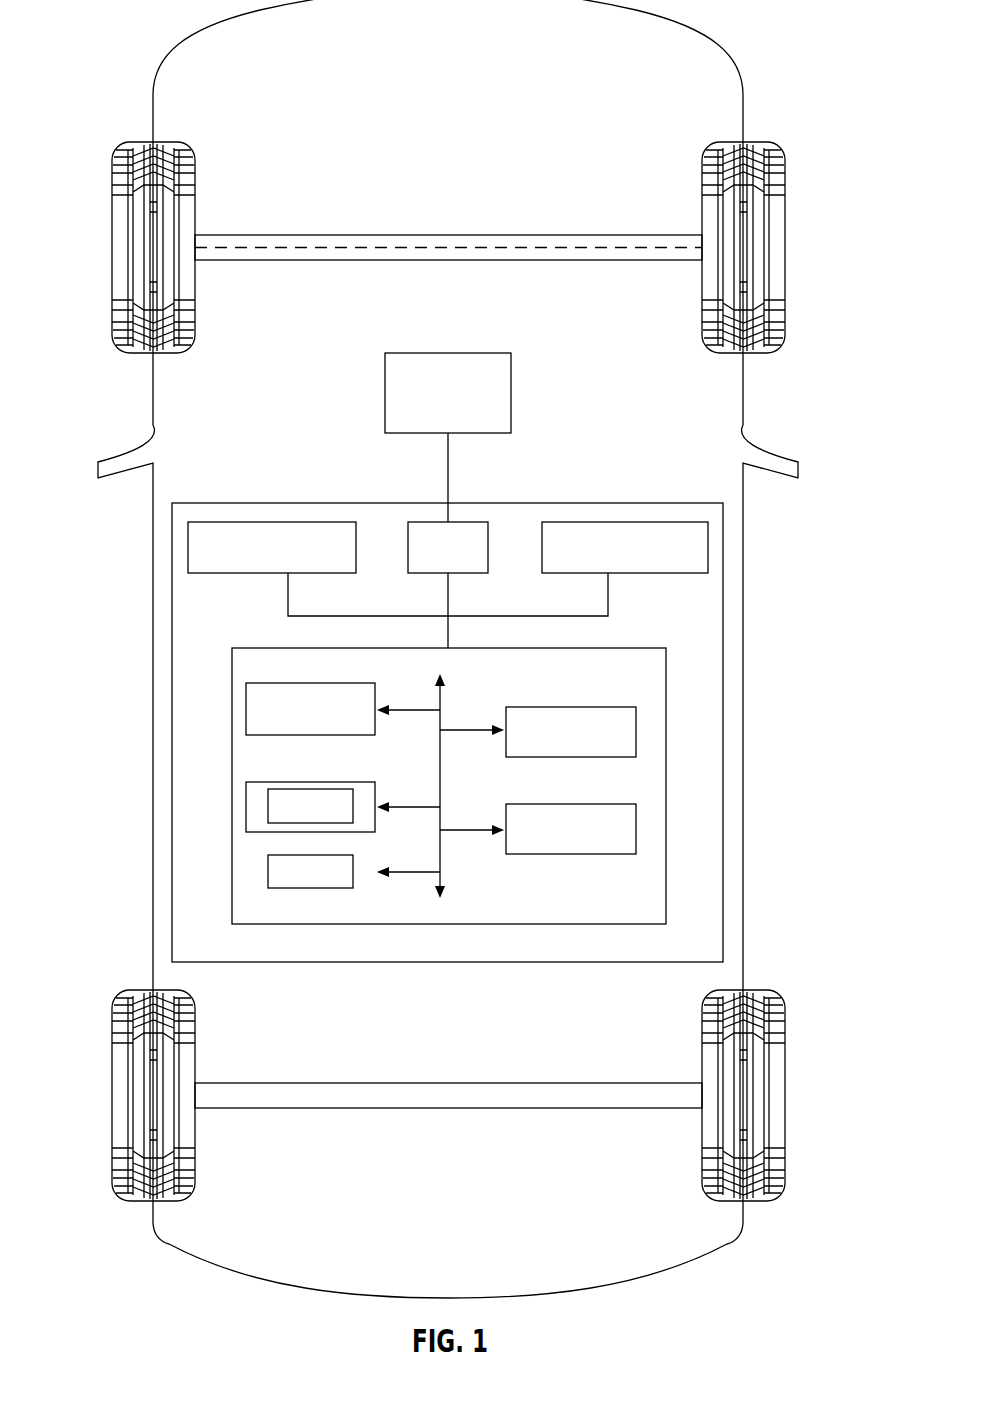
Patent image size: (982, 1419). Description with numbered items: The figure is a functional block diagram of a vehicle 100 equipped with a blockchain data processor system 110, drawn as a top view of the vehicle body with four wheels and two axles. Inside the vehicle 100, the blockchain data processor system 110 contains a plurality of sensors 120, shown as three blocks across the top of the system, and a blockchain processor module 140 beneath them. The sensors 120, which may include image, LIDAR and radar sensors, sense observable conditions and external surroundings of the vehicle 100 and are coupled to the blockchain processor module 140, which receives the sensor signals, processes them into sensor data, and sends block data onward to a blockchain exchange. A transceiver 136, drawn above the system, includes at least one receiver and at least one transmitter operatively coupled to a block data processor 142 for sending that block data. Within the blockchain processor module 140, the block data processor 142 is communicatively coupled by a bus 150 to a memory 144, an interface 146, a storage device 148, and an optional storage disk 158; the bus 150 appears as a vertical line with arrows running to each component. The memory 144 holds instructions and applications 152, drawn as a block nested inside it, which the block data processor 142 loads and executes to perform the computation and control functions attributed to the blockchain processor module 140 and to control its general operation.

The vehicle 100 is at (150, 48).
The blockchain data processor system 110 is at (153, 523).
The sensors 120 is at (276, 522).
The transceiver 136 is at (435, 353).
The blockchain processor module 140 is at (666, 677).
The block data processor 142 is at (247, 710).
The memory 144 is at (246, 823).
The interface 146 is at (267, 878).
The storage device 148 is at (636, 830).
The bus 150 is at (444, 884).
The instructions and applications 152 is at (267, 802).
The storage disk 158 is at (636, 732).